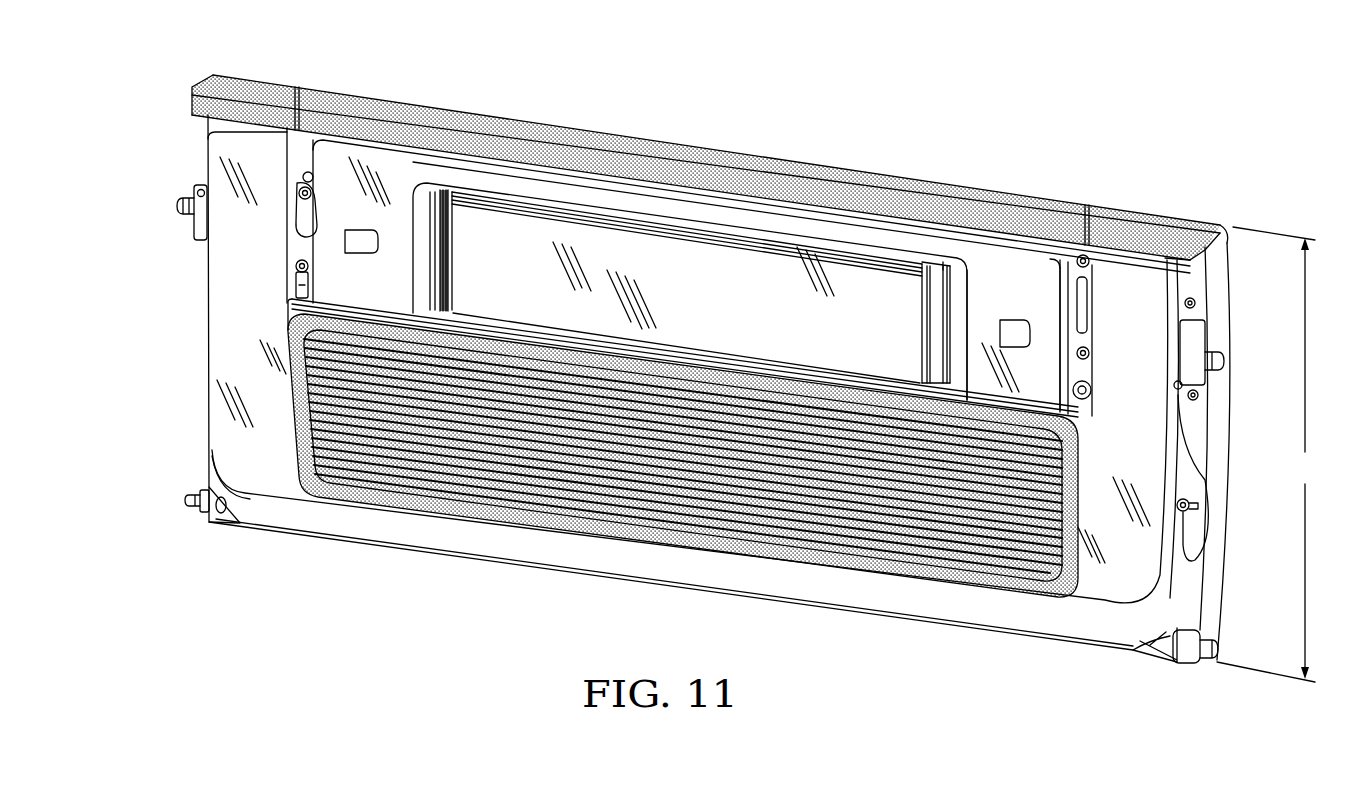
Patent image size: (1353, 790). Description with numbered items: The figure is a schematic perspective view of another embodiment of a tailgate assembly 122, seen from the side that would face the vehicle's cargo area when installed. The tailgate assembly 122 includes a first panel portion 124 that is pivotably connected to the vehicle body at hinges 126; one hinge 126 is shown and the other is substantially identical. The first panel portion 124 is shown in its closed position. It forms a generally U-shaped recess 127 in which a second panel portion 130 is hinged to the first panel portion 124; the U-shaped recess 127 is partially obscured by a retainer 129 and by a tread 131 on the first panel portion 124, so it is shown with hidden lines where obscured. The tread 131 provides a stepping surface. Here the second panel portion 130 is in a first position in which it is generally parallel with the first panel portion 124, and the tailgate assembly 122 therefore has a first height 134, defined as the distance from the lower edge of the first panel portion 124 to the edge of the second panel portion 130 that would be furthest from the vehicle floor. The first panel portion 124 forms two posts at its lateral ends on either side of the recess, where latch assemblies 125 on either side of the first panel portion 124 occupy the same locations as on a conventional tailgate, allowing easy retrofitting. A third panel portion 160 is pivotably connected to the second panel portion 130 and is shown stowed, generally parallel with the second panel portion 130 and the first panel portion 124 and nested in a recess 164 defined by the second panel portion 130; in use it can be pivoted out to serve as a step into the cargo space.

The tailgate assembly 122 is at (947, 104).
The first panel portion 124 is at (1100, 598).
The latch assemblies 125 is at (173, 198).
The hinges 126 is at (182, 508).
The U-shaped recess 127 is at (307, 178).
The retainer 129 is at (296, 312).
The second panel portion 130 is at (1017, 287).
The tread 131 is at (962, 542).
The first height 134 is at (1269, 454).
The third panel portion 160 is at (705, 270).
The recess 164 is at (437, 187).